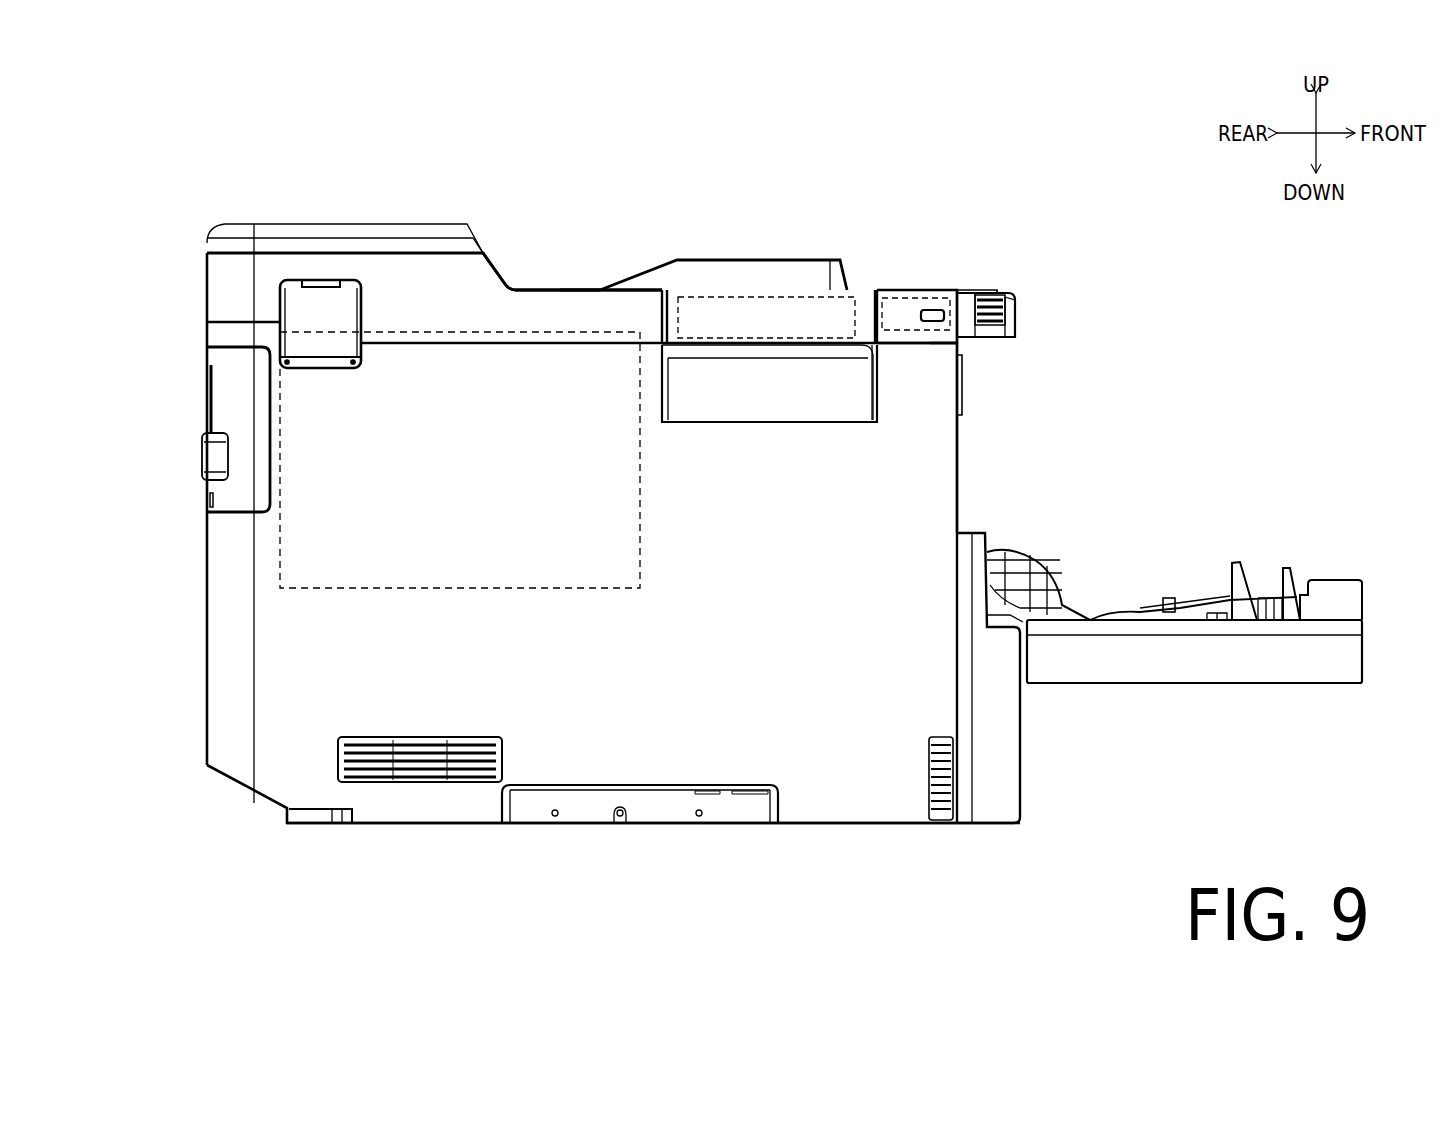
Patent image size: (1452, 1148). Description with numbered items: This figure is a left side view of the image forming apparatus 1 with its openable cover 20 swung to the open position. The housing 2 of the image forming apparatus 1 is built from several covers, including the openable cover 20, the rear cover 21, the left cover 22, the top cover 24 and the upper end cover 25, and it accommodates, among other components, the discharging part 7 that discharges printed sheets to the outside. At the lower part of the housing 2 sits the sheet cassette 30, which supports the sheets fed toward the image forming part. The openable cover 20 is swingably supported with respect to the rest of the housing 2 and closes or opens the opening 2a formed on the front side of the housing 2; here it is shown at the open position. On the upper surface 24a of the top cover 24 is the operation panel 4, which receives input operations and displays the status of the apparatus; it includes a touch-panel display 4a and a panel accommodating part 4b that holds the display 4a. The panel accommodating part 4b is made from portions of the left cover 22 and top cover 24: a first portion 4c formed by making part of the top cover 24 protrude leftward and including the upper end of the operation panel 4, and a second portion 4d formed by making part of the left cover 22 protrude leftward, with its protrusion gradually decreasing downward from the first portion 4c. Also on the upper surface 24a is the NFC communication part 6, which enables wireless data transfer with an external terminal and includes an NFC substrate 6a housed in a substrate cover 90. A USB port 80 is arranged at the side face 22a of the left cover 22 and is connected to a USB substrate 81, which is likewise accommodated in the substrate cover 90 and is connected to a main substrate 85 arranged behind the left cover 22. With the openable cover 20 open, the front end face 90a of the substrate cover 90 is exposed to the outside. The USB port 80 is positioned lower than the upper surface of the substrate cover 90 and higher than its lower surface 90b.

The image forming apparatus 1 is at (790, 140).
The housing 2 is at (456, 830).
The opening 2a is at (976, 463).
The operation panel 4 is at (784, 280).
The display 4a is at (745, 300).
The panel accommodating part 4b is at (620, 179).
The first portion 4c is at (648, 388).
The second portion 4d is at (648, 318).
The NFC communication part 6 is at (893, 287).
The NFC substrate 6a is at (940, 290).
The discharging part 7 is at (528, 278).
The openable cover 20 is at (1190, 694).
The rear cover 21 is at (203, 593).
The left cover 22 is at (816, 748).
The side face 22a is at (628, 756).
The top cover 24 is at (565, 308).
The upper surface 24a is at (578, 290).
The upper end cover 25 is at (338, 217).
The sheet cassette 30 is at (1028, 736).
The USB port 80 is at (946, 316).
The USB substrate 81 is at (940, 352).
The main substrate 85 is at (323, 570).
The substrate cover 90 is at (1016, 303).
The end face 90a is at (1018, 326).
The lower surface 90b is at (996, 340).